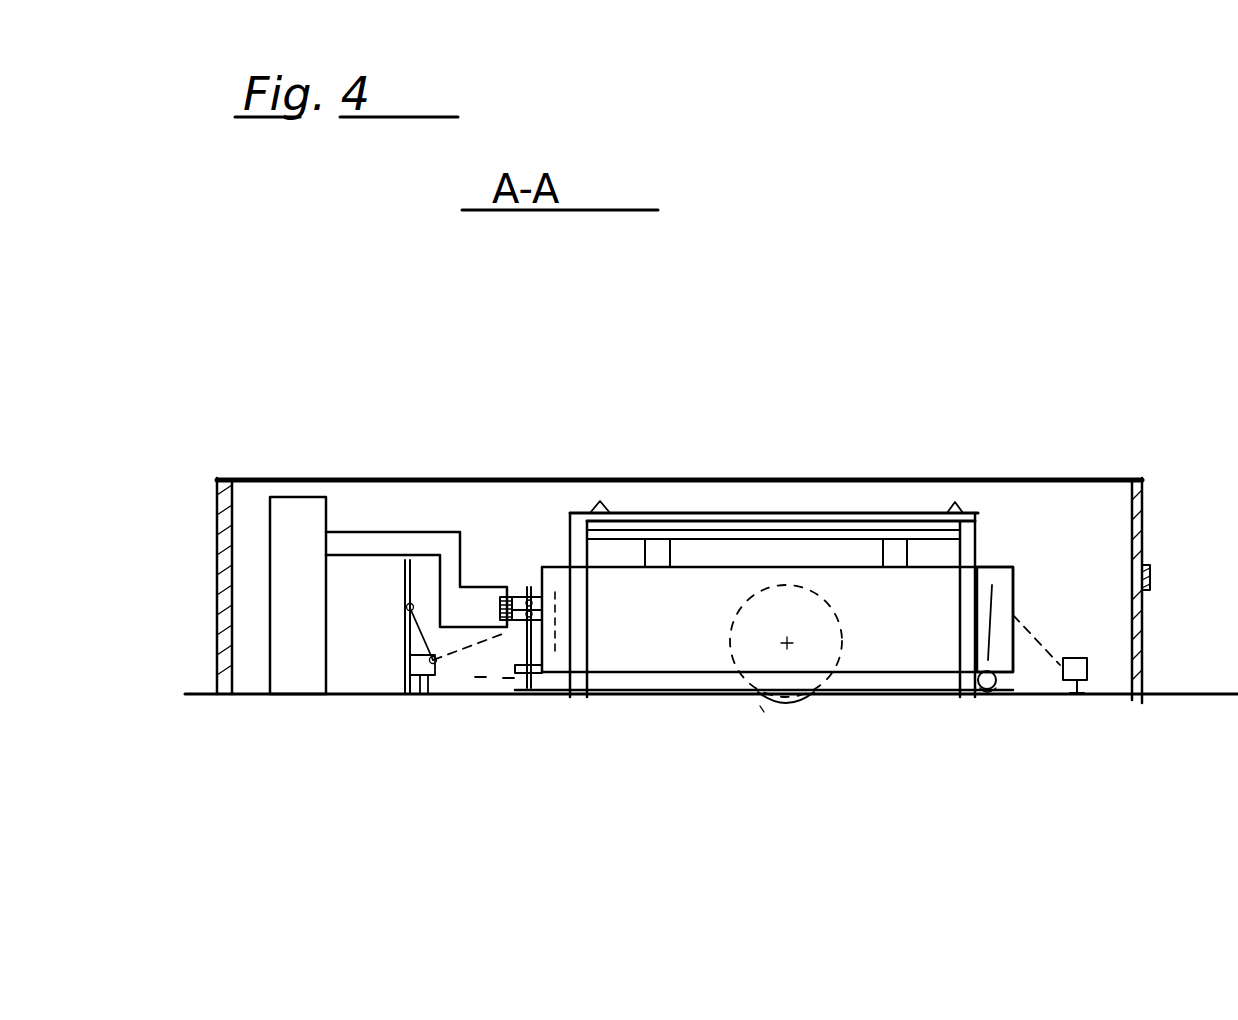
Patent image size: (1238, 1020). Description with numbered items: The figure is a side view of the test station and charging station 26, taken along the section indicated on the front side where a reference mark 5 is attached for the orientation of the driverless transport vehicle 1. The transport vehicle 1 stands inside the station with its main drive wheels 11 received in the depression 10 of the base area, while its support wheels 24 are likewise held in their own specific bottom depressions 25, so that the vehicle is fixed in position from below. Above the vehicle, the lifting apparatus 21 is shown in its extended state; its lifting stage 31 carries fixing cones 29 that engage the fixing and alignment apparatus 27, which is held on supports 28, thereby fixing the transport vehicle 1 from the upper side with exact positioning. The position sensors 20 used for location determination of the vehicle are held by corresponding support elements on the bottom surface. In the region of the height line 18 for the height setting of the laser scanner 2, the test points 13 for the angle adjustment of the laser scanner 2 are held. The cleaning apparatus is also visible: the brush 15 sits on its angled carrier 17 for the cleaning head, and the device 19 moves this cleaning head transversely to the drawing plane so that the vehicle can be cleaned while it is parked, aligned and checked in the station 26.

The driverless transport vehicle 1 is at (1000, 607).
The laser scanner 2 is at (524, 598).
The reference mark 5 is at (1152, 575).
The depression in the base area 10 is at (813, 700).
The main drive wheels 11 is at (786, 600).
The test points for the angle adjustment 13 is at (523, 607).
The brush 15 is at (510, 594).
The carrier for the cleaning head 17 is at (405, 560).
The test line for height setting 18 is at (408, 610).
The device for moving the cleaning apparatus 19 is at (308, 497).
The position sensors 20 is at (1073, 668).
The lifting apparatus 21 is at (898, 553).
The support wheel 24 is at (997, 535).
The bottom depression for a support wheel 25 is at (990, 702).
The test station and charging station 26 is at (1062, 480).
The fixing and alignment apparatus 27 is at (745, 513).
The supports for alignment apparatus 28 is at (578, 592).
The fixing cones 29 is at (947, 525).
The lifting stage 31 is at (717, 535).